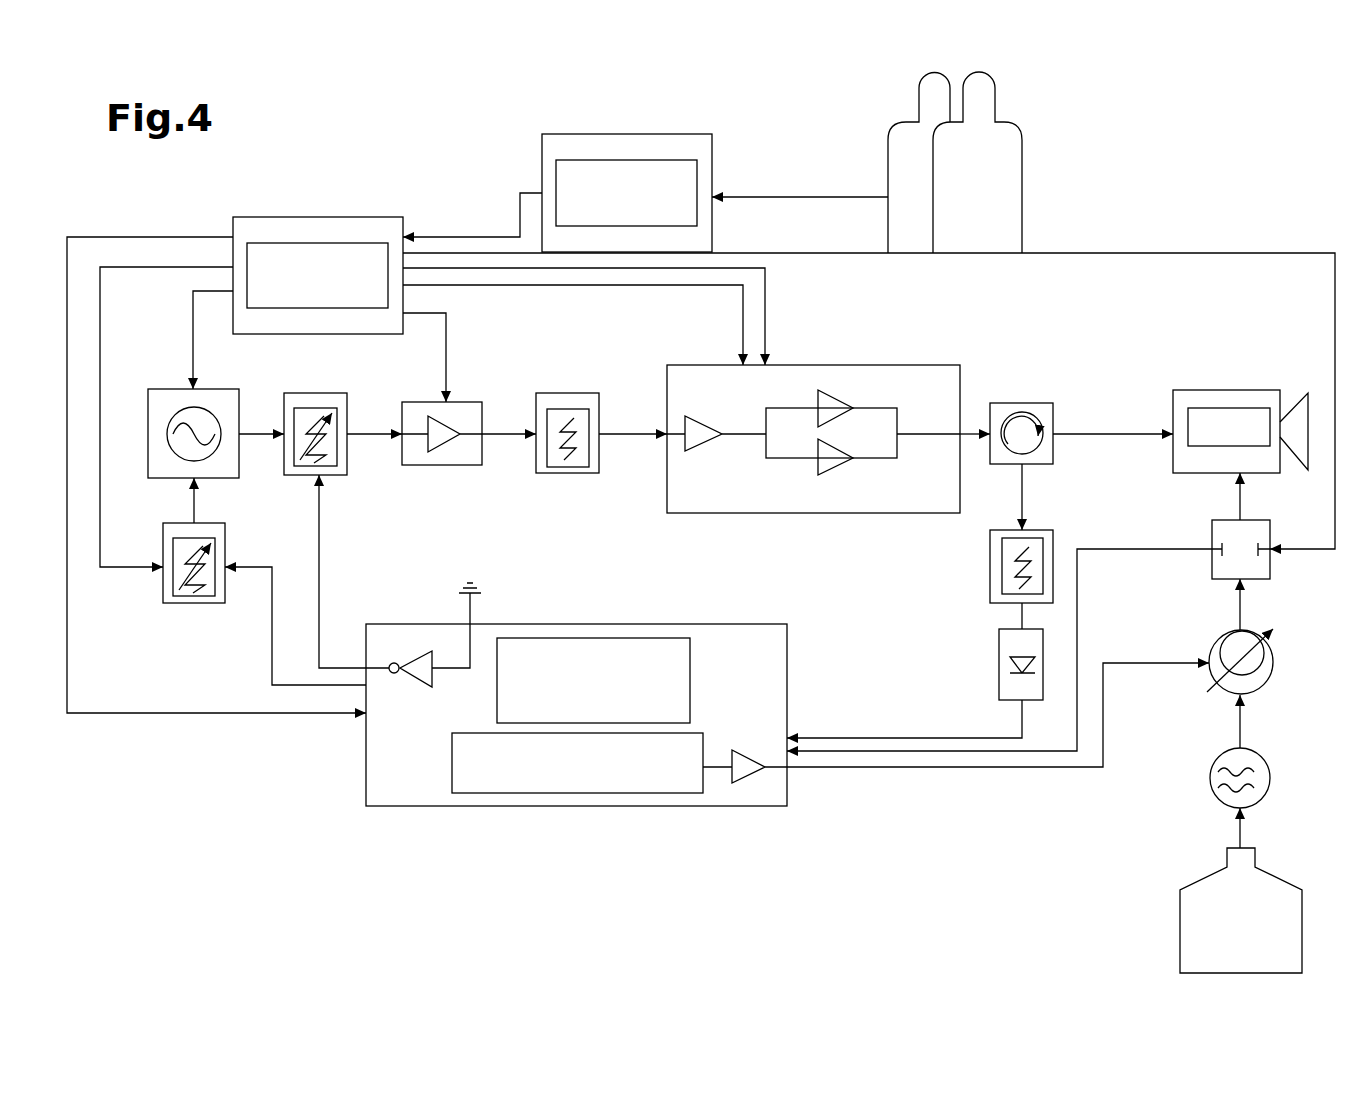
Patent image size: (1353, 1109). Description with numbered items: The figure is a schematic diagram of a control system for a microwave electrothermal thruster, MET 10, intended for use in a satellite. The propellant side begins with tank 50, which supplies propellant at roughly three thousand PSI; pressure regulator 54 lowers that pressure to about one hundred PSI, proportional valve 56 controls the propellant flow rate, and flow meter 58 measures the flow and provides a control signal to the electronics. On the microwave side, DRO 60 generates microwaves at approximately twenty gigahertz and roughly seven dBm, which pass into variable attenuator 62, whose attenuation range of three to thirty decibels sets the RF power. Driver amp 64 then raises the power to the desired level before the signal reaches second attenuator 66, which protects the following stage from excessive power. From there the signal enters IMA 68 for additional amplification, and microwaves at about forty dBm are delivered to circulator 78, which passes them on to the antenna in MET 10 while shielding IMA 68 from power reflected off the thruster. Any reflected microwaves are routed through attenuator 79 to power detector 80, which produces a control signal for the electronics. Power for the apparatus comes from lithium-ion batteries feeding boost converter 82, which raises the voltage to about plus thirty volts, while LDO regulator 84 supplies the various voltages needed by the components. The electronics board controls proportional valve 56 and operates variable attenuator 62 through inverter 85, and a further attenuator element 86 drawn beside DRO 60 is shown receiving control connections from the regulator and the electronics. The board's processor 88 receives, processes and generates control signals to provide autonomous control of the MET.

The MET 10 is at (1238, 390).
The tank 50 is at (1198, 880).
The pressure regulator 54 is at (1220, 760).
The proportional valve 56 is at (1223, 635).
The flow meter 58 is at (1223, 520).
The DRO 60 is at (170, 389).
The variable attenuator 62 is at (330, 393).
The driver amp 64 is at (467, 467).
The second attenuator 66 is at (587, 473).
The IMA 68 is at (905, 365).
The circulator 78 is at (1017, 403).
The attenuator 79 is at (990, 558).
The power detector 80 is at (999, 640).
The boost converter 82 is at (542, 156).
The LDO regulator 84 is at (283, 217).
The inverter 85 is at (418, 653).
The variable attenuator 86 is at (195, 603).
The processor 88 is at (677, 638).